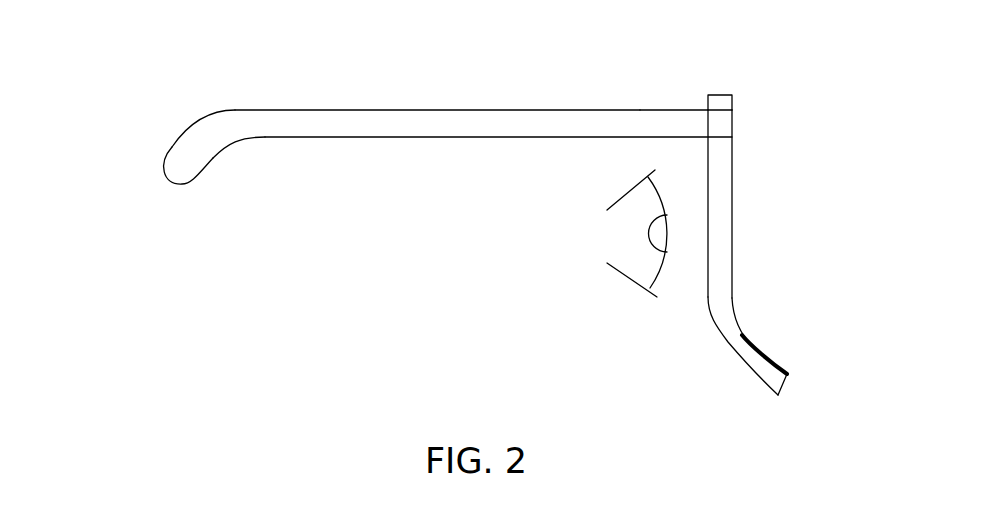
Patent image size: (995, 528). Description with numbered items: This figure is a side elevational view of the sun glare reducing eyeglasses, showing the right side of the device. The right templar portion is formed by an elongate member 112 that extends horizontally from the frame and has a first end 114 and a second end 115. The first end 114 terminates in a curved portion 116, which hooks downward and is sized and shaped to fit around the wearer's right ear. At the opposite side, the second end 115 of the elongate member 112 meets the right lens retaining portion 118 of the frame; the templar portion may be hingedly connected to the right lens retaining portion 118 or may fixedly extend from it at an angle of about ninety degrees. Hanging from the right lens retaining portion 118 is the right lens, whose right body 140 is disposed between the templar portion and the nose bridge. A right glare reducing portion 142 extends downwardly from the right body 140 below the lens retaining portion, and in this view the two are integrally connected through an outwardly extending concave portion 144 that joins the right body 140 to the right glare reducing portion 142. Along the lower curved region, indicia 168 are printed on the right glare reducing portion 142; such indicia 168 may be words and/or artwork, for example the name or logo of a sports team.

The elongate member 112 is at (438, 123).
The first end 114 is at (188, 125).
The second end 115 is at (682, 108).
The curved portion 116 is at (190, 183).
The right lens retaining portion 118 is at (728, 92).
The right body 140 is at (732, 181).
The right glare reducing portion 142 is at (787, 377).
The outwardly extending concave portion 144 is at (733, 305).
The indicia 168 is at (763, 355).